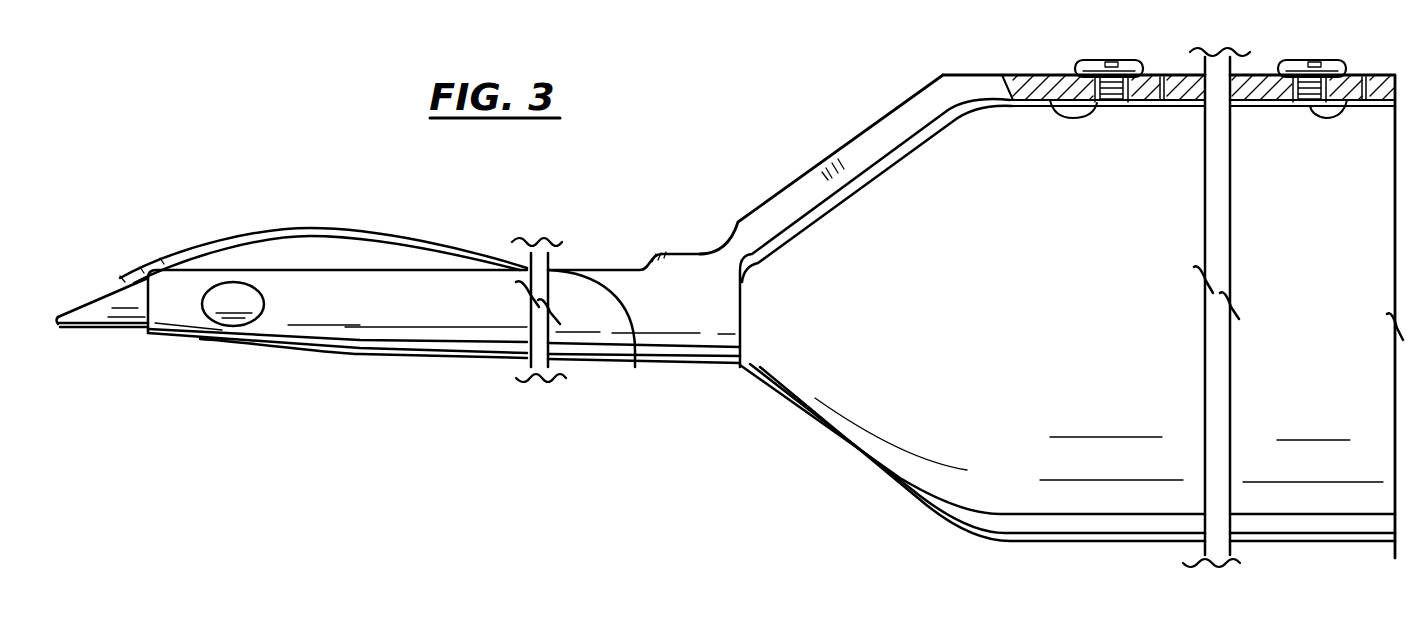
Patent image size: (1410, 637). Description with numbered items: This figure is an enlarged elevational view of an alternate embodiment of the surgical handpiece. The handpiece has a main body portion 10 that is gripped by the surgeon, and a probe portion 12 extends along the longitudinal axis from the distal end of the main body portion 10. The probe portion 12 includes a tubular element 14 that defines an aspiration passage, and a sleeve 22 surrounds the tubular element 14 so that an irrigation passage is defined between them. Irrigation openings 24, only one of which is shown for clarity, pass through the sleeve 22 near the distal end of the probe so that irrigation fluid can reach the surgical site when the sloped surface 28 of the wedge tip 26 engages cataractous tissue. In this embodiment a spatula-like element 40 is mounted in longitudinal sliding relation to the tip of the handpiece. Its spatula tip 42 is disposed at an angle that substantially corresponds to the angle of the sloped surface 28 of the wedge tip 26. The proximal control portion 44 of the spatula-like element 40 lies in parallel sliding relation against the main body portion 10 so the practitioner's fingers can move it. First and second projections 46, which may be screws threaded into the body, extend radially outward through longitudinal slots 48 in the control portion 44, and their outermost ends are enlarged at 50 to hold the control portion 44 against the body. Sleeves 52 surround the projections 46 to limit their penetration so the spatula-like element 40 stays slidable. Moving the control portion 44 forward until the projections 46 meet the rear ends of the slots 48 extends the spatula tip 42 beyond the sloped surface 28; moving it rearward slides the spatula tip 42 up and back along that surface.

The main body portion 10 is at (1073, 285).
The probe portion 12 is at (399, 325).
The tubular element 14 is at (117, 338).
The sleeve 22 is at (333, 356).
The irrigation openings 24 is at (222, 312).
The wedge tip 26 is at (68, 332).
The sloped surface 28 is at (85, 302).
The spatula-like element 40 is at (814, 150).
The spatula tip 42 is at (132, 272).
The control portion 44 is at (1017, 75).
The projections 46 is at (1214, 53).
The slots 48 is at (1162, 80).
The enlarged ends 50 is at (1088, 60).
The sleeves 52 is at (1048, 100).